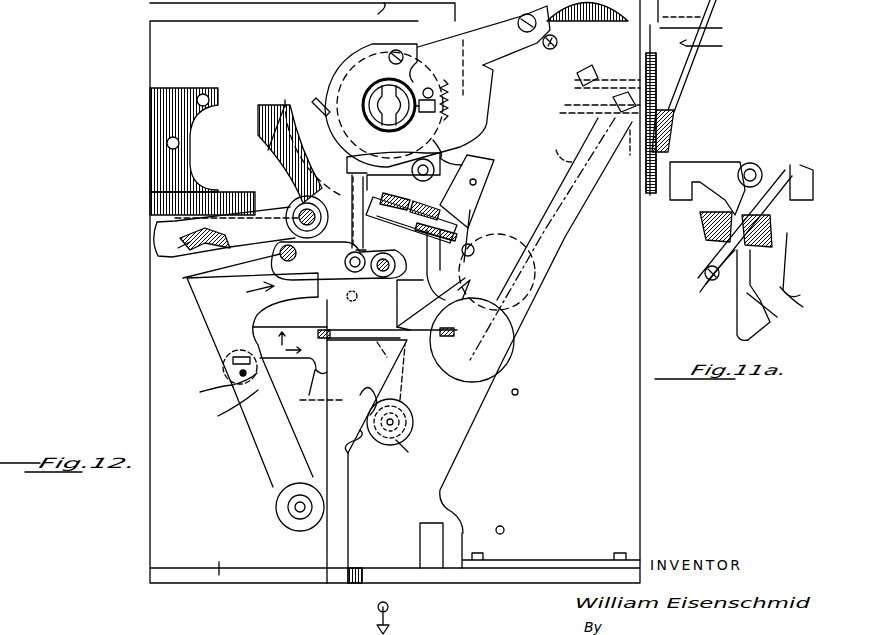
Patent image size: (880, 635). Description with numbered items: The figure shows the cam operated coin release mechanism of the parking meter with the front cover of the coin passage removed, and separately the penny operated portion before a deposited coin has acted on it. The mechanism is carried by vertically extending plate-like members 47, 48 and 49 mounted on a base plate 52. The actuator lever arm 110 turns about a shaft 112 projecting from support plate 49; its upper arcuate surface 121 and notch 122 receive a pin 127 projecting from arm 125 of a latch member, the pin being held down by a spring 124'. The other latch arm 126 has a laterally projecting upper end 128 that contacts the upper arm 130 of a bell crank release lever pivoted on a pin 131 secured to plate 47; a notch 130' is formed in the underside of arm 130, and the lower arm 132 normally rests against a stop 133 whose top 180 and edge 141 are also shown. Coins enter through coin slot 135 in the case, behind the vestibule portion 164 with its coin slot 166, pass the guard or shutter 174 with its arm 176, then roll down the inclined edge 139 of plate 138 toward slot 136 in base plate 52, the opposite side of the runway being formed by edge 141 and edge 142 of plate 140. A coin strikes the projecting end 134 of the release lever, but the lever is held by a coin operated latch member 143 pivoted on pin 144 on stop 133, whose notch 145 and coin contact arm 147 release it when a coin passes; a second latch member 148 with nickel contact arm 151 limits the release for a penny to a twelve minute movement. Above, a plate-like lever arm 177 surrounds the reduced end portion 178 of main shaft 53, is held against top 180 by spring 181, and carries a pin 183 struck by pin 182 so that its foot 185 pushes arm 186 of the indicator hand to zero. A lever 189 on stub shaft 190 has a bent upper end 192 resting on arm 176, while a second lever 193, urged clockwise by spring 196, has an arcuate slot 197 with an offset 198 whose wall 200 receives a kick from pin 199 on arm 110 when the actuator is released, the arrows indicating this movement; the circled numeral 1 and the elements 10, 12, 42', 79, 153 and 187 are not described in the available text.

In FIG. 12, the shaft 1 is at (482, 308).
In FIG. 12, the base plate 10 is at (200, 193).
In FIG. 12, the lever arm 12 is at (224, 242).
In FIG. 12, the rod 42' is at (704, 28).
In FIG. 12, the support plate 47 is at (376, 512).
In FIG. 12, the plate-like member 48 is at (196, 51).
In FIG. 12, the support plate 49 is at (189, 490).
In FIG. 12, the base plate 52 is at (214, 559).
In FIG. 12, the main shaft 53 is at (368, 112).
In FIG. 12, the pin 79 is at (200, 256).
In FIG. 12, the lever arm of actuator 110 is at (258, 442).
In FIG. 12, the shaft 112 is at (296, 515).
In FIG. 12, the upper arcuate surface 121 is at (192, 280).
In FIG. 12, the notch 122 is at (276, 288).
In FIG. 12, the spring 124' is at (377, 379).
In FIG. 12, the arm of latch member 125 is at (338, 261).
In FIG. 12, the arm of latch member 126 is at (349, 212).
In FIG. 12, the pin 127 is at (278, 251).
In FIG. 12, the laterally projecting upper end 128 is at (374, 117).
In FIG. 12, the upper arm of release lever 130 is at (393, 171).
In FIG. 11A, the notch 130' is at (701, 188).
In FIG. 12, the pin 131 is at (432, 170).
In FIG. 11A, the pin 131 is at (752, 162).
In FIG. 12, the lower arm of release lever 132 is at (421, 280).
In FIG. 11A, the lower arm of release lever 132 is at (735, 300).
In FIG. 12, the stop 133 is at (476, 205).
In FIG. 11A, the stop 133 is at (804, 181).
In FIG. 12, the laterally projecting end of release lever 134 is at (431, 302).
In FIG. 11A, the laterally projecting end of release lever 134 is at (768, 318).
In FIG. 12, the coin slot 135 is at (670, 90).
In FIG. 12, the slot 136 is at (352, 598).
In FIG. 12, the plate 138 is at (552, 418).
In FIG. 12, the edge 139 is at (552, 262).
In FIG. 12, the plate 140 is at (360, 409).
In FIG. 12, the edge of stop 141 is at (505, 173).
In FIG. 12, the edge of plate 142 is at (352, 458).
In FIG. 12, the coin operated latch member 143 is at (409, 209).
In FIG. 11A, the coin operated latch member 143 is at (700, 231).
In FIG. 12, the pivot pin 144 is at (462, 228).
In FIG. 11A, the pivot pin 144 is at (796, 265).
In FIG. 11A, the notch 145 is at (745, 215).
In FIG. 12, the coin contact arm 147 is at (460, 294).
In FIG. 11A, the coin contact arm 147 is at (793, 303).
In FIG. 12, the second latch member 148 is at (408, 226).
In FIG. 11A, the second latch member 148 is at (717, 277).
In FIG. 12, the coin contact arm 151 is at (476, 255).
In FIG. 12, the screw 153 is at (370, 278).
In FIG. 11A, the screw 153 is at (712, 256).
In FIG. 12, the portion 164 is at (700, 58).
In FIG. 12, the coin slot 166 is at (700, 78).
In FIG. 12, the coin slot guard or shutter 174 is at (638, 181).
In FIG. 12, the laterally extending arm 176 is at (618, 78).
In FIG. 12, the lever arm 177 is at (508, 51).
In FIG. 12, the reduced end portion of main shaft 178 is at (403, 54).
In FIG. 12, the top of release lever stop 180 is at (466, 163).
In FIG. 12, the spring 181 is at (452, 108).
In FIG. 12, the pin 182 is at (425, 117).
In FIG. 12, the pin 183 is at (430, 87).
In FIG. 12, the foot 185 is at (318, 96).
In FIG. 12, the arm 186 is at (262, 136).
In FIG. 12, the cam edge 187 is at (268, 104).
In FIG. 12, the lever 189 is at (556, 146).
In FIG. 12, the stub shaft 190 is at (414, 420).
In FIG. 12, the upper end of lever 192 is at (572, 96).
In FIG. 12, the second lever 193 is at (293, 388).
In FIG. 12, the spring 196 is at (417, 453).
In FIG. 12, the arcuate slot 197 is at (222, 407).
In FIG. 12, the offset 198 is at (235, 363).
In FIG. 12, the pin 199 is at (214, 385).
In FIG. 12, the wall of offset 200 is at (262, 338).